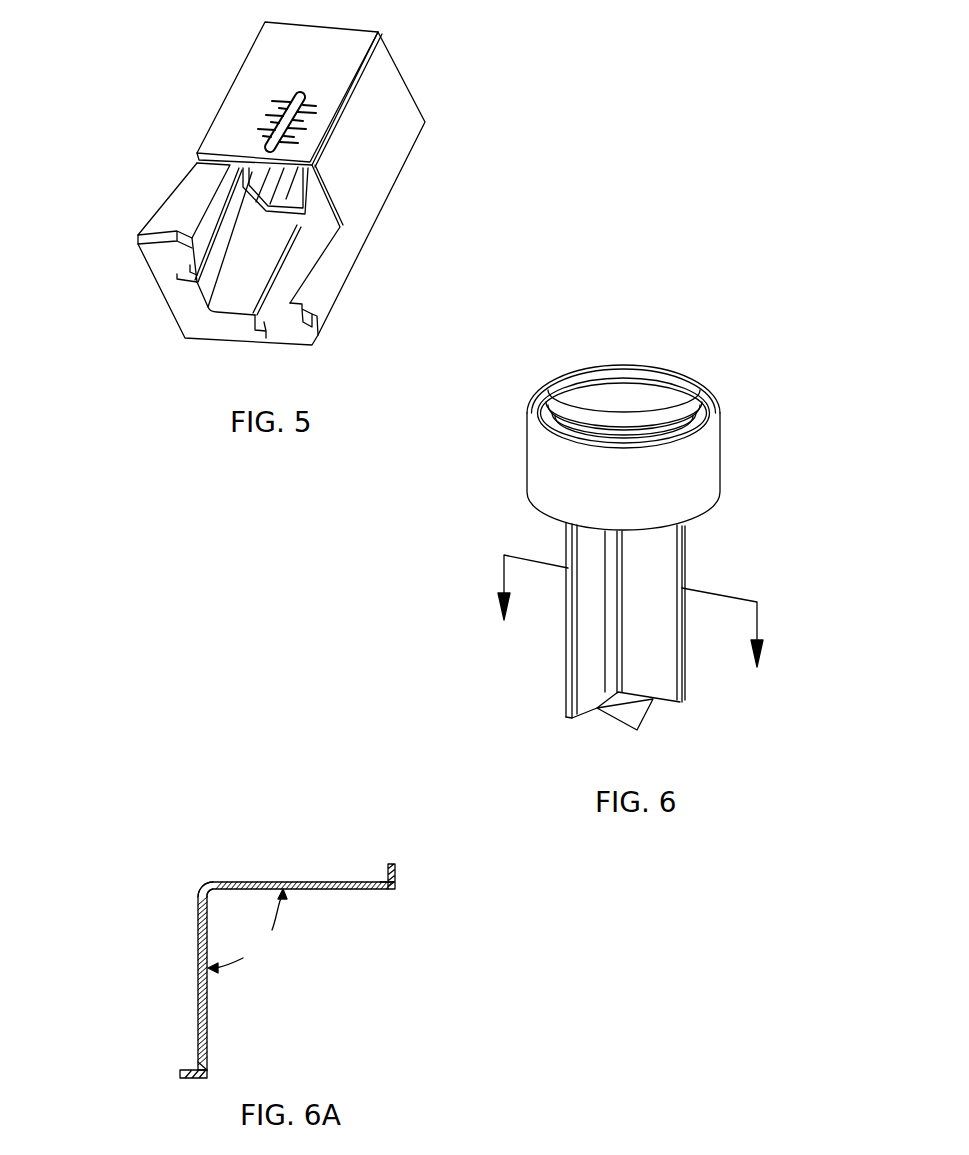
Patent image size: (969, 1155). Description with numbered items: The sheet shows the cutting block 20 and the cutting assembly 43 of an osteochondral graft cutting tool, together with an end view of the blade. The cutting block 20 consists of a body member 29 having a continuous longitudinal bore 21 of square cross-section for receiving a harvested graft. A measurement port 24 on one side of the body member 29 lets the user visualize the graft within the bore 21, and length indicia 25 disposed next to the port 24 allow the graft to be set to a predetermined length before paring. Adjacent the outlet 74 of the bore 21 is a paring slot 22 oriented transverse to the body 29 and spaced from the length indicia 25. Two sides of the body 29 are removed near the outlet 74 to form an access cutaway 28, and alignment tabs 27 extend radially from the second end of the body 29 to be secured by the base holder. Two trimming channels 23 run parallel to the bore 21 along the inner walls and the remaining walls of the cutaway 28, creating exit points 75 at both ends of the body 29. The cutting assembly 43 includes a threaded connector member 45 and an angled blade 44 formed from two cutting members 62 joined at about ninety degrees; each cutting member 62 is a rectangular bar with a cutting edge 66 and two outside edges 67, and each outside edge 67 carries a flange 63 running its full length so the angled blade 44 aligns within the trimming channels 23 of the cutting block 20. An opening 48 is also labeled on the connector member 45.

In FIG. 5, the cutting block 20 is at (183, 49).
In FIG. 5, the longitudinal bore 21 is at (296, 198).
In FIG. 5, the paring slot 22 is at (197, 156).
In FIG. 5, the trimming channels 23 is at (217, 242).
In FIG. 5, the measurement port 24 is at (298, 96).
In FIG. 5, the length indicia 25 is at (318, 130).
In FIG. 5, the alignment tabs 27 is at (147, 231).
In FIG. 5, the access cutaway 28 is at (235, 307).
In FIG. 5, the body member 29 is at (365, 193).
In FIG. 5, the outlet 74 is at (307, 193).
In FIG. 5, the exit points 75 is at (180, 264).
In FIG. 6, the cutting assembly 43 is at (448, 545).
In FIG. 6, the angled blade 44 is at (683, 553).
In FIG. 6, the threaded connector member 45 is at (703, 463).
In FIG. 6, the threaded opening 48 is at (636, 386).
In FIG. 6, the cutting members 62 is at (592, 555).
In FIG. 6A, the cutting members 62 is at (333, 890).
In FIG. 6, the flange 63 is at (683, 643).
In FIG. 6A, the flange 63 is at (388, 865).
In FIG. 6, the cutting edge 66 is at (637, 732).
In FIG. 6, the outside edges 67 is at (687, 680).
In FIG. 6A, the outside edges 67 is at (380, 879).